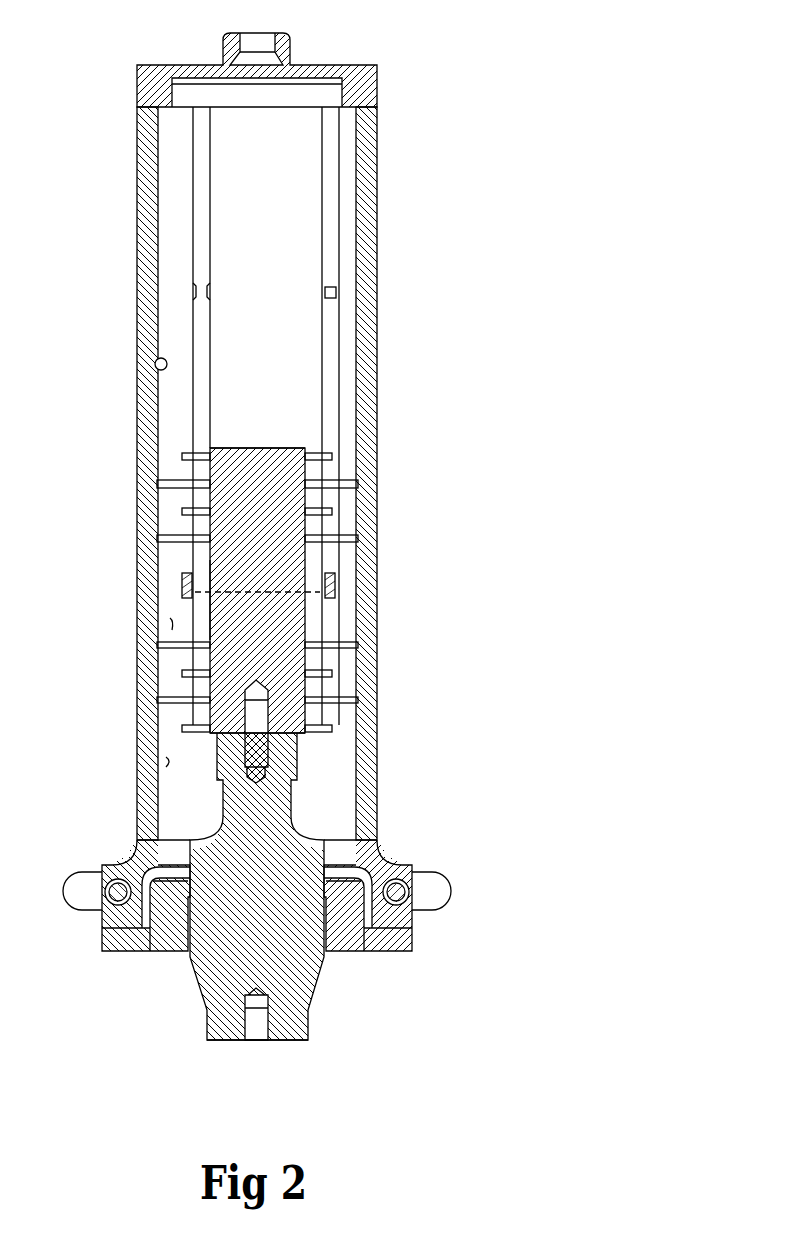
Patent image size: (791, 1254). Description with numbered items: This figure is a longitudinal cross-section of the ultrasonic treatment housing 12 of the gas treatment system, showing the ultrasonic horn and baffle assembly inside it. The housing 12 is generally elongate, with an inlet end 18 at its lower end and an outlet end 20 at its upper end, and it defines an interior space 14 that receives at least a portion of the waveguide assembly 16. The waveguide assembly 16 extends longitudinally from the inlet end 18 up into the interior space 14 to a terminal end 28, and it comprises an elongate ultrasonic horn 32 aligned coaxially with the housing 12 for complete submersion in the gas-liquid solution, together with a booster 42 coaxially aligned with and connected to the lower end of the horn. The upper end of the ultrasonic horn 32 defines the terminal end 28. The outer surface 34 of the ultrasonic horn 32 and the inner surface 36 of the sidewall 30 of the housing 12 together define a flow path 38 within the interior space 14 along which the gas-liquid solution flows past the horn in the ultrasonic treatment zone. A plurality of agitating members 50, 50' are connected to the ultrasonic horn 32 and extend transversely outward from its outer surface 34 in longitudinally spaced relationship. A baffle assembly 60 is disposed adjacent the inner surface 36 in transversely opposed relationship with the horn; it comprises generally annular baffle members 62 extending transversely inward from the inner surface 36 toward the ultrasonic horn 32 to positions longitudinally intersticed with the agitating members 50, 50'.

The ultrasonic treatment housing 12 is at (378, 327).
The interior space 14 is at (243, 240).
The waveguide assembly 16 is at (210, 796).
The inlet end 18 is at (385, 935).
The outlet end 20 is at (327, 65).
The terminal end 28 is at (249, 447).
The sidewall 30 is at (137, 588).
The ultrasonic horn 32 is at (297, 710).
The outer surface 34 is at (305, 562).
The inner surface 36 is at (166, 762).
The flow path 38 is at (170, 623).
The booster 42 is at (225, 930).
The agitating member 50 is at (237, 602).
The agitating member 50' is at (312, 584).
The baffle assembly 60 is at (347, 473).
The baffle member 62 is at (181, 480).